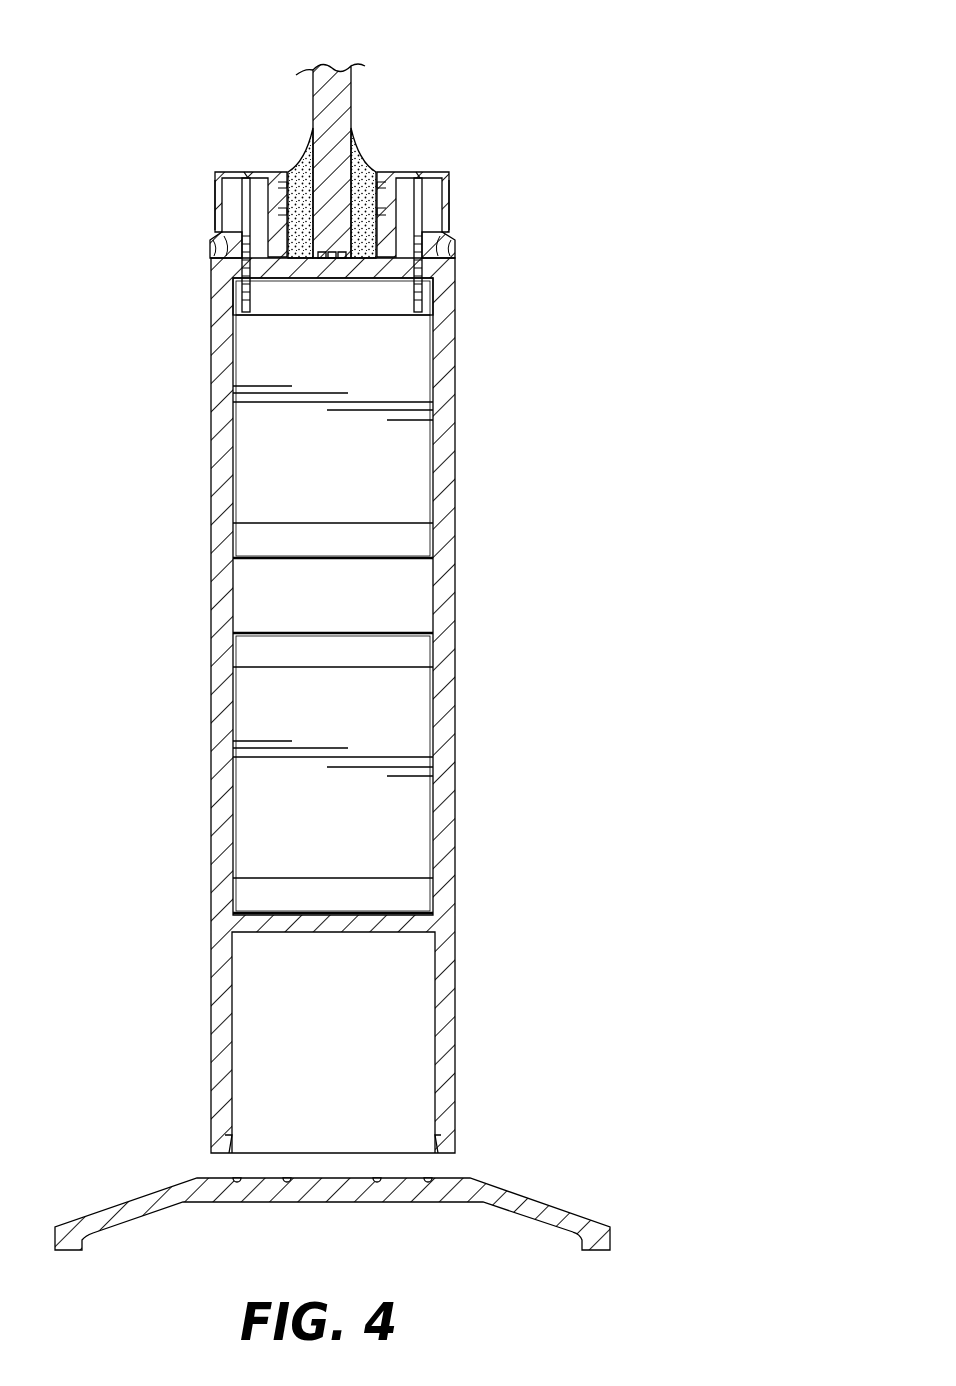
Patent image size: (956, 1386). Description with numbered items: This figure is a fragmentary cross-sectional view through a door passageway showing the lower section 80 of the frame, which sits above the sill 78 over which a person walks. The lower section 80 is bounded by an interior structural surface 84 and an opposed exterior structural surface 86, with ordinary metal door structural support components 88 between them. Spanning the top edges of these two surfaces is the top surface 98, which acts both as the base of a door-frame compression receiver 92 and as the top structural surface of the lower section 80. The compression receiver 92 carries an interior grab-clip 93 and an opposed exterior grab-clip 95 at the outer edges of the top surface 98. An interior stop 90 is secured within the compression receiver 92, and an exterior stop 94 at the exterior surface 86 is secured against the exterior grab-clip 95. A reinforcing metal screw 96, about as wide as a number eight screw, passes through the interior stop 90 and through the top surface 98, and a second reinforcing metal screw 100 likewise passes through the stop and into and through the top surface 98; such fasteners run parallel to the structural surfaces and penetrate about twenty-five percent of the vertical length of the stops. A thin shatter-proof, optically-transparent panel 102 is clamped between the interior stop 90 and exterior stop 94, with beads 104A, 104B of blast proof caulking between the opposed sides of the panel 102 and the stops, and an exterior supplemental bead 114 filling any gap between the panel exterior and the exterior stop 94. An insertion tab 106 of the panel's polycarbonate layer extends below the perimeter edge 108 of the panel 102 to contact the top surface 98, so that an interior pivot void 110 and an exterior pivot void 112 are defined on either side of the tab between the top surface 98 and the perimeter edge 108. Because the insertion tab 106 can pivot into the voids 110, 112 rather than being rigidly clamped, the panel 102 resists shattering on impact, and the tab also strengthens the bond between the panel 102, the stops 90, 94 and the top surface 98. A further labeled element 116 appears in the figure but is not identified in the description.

The sill 78 is at (473, 1180).
The lower section 80 is at (588, 73).
The interior structural surface 84 is at (455, 613).
The exterior structural surface 86 is at (212, 605).
The metal door structural support components 88 is at (391, 477).
The interior stop 90 is at (450, 177).
The door-frame compression receiver 92 is at (513, 202).
The interior grab-clip 93 is at (453, 243).
The exterior stop 94 is at (215, 193).
The exterior grab-clip 95 is at (212, 240).
The reinforcing metal screw 96 is at (420, 172).
The top surface of the compression receiver 98 is at (452, 217).
The second reinforcing metal screw 100 is at (243, 178).
The thin panel 102 is at (313, 82).
The bead of blast proof caulking 104A is at (375, 170).
The bead of blast proof caulking 104B is at (247, 173).
The insertion tab 106 is at (330, 258).
The perimeter edge 108 is at (347, 258).
The interior pivot void 110 is at (343, 258).
The exterior pivot void 112 is at (317, 258).
The exterior supplemental bead 114 is at (365, 150).
The filter material 116 is at (293, 170).